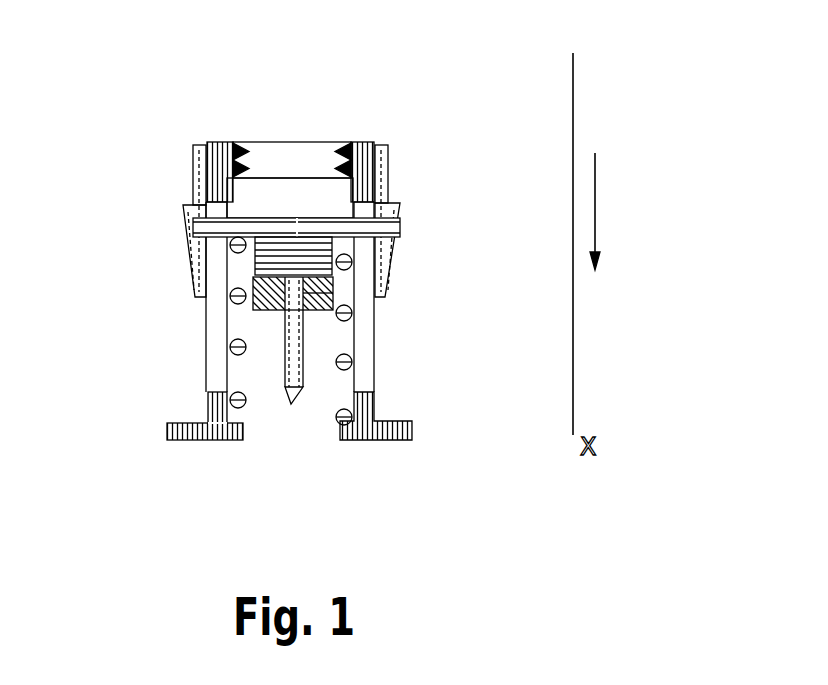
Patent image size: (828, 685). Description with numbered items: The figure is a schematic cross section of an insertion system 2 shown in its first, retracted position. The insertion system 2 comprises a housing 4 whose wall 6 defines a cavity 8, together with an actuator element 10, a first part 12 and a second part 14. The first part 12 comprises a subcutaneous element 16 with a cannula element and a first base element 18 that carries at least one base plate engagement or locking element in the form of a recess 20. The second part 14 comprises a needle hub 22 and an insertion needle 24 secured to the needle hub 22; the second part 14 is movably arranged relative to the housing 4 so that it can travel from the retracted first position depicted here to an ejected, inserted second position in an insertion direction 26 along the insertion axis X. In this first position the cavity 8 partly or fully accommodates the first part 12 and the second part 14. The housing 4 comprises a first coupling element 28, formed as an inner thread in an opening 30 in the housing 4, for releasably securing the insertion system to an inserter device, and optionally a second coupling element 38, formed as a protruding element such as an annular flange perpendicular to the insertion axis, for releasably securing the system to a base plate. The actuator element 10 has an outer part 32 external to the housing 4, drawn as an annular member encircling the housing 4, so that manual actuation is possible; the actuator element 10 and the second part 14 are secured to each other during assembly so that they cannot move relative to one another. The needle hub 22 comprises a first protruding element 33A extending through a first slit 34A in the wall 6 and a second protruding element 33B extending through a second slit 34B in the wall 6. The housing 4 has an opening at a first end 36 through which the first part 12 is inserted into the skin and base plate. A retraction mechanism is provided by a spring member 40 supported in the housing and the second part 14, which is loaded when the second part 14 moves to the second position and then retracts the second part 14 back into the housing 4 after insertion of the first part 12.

The insertion system 2 is at (150, 130).
The housing 4 is at (198, 440).
The wall 6 is at (363, 403).
The cavity 8 is at (337, 386).
The actuator element 10 is at (190, 204).
The first part 12 is at (205, 303).
The second part 14 is at (257, 218).
The subcutaneous element 16 is at (305, 385).
The first base element 18 is at (268, 313).
The recess 20 is at (323, 290).
The needle hub 22 is at (295, 218).
The insertion needle 24 is at (290, 392).
The insertion direction 26 is at (595, 207).
The first coupling element 28 is at (246, 148).
The opening 30 is at (293, 152).
The outer part 32 is at (388, 180).
The first protruding element 33A is at (375, 228).
The second protruding element 33B is at (192, 234).
The first slit 34A is at (367, 338).
The second slit 34B is at (215, 378).
The first end 36 is at (281, 437).
The second coupling element 38 is at (167, 432).
The spring member 40 is at (348, 258).